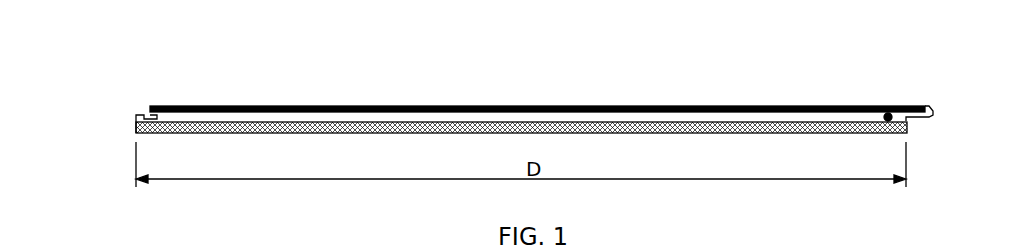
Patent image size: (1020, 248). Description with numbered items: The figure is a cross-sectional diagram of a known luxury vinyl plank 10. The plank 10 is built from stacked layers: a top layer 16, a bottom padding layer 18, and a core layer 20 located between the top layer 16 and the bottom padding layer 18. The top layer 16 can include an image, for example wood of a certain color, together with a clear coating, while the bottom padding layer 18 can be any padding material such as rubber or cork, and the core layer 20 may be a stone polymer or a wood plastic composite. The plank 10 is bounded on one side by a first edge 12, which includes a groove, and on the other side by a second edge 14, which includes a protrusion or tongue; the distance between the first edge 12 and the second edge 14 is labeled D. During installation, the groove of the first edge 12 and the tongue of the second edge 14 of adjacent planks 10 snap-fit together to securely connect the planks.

The luxury vinyl plank 10 is at (107, 27).
The first edge 12 is at (136, 115).
The second edge 14 is at (925, 107).
The top layer 16 is at (220, 106).
The bottom padding layer 18 is at (846, 134).
The core layer 20 is at (908, 122).